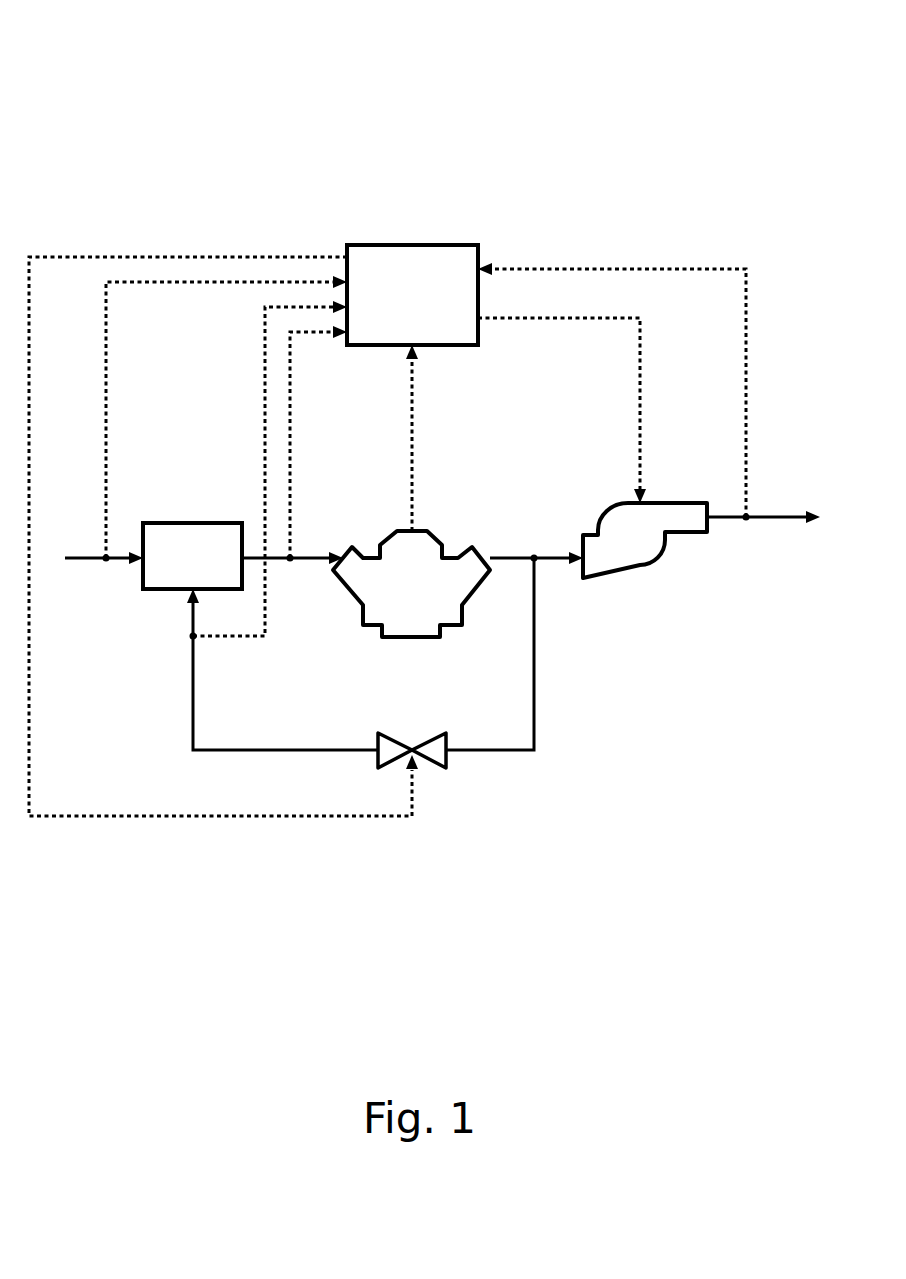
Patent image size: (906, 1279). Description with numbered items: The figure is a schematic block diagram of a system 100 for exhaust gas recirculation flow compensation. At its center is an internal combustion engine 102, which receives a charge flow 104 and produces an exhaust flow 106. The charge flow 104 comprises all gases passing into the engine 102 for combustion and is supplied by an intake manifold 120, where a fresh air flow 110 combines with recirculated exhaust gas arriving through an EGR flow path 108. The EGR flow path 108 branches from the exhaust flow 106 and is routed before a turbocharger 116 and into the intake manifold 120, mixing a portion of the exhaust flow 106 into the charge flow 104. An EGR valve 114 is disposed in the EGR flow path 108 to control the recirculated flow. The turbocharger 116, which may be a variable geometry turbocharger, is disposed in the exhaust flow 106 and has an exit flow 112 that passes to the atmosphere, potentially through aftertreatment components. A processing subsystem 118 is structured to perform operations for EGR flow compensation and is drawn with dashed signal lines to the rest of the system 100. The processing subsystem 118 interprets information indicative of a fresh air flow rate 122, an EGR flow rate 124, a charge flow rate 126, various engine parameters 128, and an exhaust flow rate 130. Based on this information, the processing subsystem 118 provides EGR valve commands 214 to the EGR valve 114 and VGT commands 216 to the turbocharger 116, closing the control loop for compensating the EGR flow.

The system 100 is at (90, 66).
The internal combustion engine 102 is at (430, 597).
The charge flow 104 is at (316, 562).
The exhaust flow 106 is at (505, 551).
The EGR flow path 108 is at (503, 752).
The fresh air flow 110 is at (79, 555).
The exit flow 112 is at (782, 521).
The EGR valve 114 is at (431, 733).
The turbocharger 116 is at (641, 569).
The processing subsystem 118 is at (430, 304).
The intake manifold 120 is at (211, 567).
The fresh air flow rate 122 is at (107, 378).
The EGR flow rate 124 is at (263, 409).
The charge flow rate 126 is at (291, 431).
The engine parameters 128 is at (413, 431).
The exhaust flow rate 130 is at (747, 343).
The EGR valve commands 214 is at (30, 338).
The VGT commands 216 is at (641, 384).